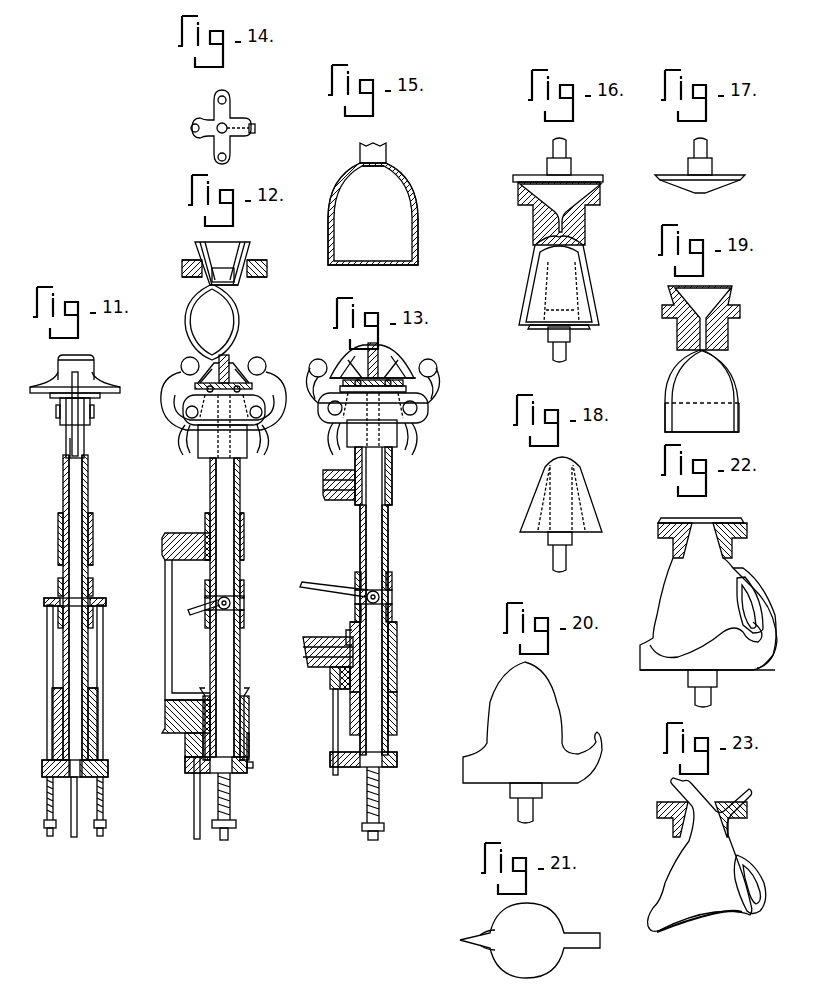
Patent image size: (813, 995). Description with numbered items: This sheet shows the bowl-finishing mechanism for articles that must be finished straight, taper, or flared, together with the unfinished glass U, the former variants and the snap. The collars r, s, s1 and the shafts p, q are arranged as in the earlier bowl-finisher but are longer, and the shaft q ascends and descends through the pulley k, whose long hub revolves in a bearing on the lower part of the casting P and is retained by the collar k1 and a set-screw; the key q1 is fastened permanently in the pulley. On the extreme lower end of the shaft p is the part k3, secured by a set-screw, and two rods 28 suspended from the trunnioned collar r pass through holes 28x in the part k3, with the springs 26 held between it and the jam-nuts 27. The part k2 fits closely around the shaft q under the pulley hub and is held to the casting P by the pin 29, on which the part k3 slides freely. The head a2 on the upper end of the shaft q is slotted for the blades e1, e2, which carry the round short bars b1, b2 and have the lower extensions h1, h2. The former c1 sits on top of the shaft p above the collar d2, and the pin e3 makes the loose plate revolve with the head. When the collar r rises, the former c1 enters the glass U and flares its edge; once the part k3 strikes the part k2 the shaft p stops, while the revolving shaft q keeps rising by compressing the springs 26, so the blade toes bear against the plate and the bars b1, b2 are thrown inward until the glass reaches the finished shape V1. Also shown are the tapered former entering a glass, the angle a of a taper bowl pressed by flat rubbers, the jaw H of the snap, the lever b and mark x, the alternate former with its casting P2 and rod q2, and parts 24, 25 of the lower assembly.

In FIG. 11, the round short bar b1 is at (95, 367).
In FIG. 12, the round short bar b1 is at (262, 358).
In FIG. 13, the round short bar b1 is at (435, 362).
In FIG. 11, the blade e1 is at (100, 383).
In FIG. 12, the blade e1 is at (283, 405).
In FIG. 13, the blade e1 is at (436, 397).
In FIG. 11, the pin e3 is at (62, 408).
In FIG. 11, the head a2 is at (86, 435).
In FIG. 11, the extension h1 is at (70, 440).
In FIG. 12, the extension h1 is at (265, 456).
In FIG. 13, the extension h1 is at (412, 455).
In FIG. 12, the extension h2 is at (182, 456).
In FIG. 13, the extension h2 is at (333, 455).
In FIG. 11, the shaft q is at (88, 492).
In FIG. 12, the shaft q is at (240, 493).
In FIG. 13, the shaft q is at (388, 535).
In FIG. 11, the shaft p is at (76, 548).
In FIG. 12, the shaft p is at (224, 536).
In FIG. 13, the shaft p is at (374, 515).
In FIG. 11, the collar s1 is at (93, 583).
In FIG. 12, the collar s1 is at (244, 582).
In FIG. 13, the collar s1 is at (392, 578).
In FIG. 11, the trunnioned collar r is at (114, 598).
In FIG. 12, the trunnioned collar r is at (244, 603).
In FIG. 13, the trunnioned collar r is at (392, 597).
In FIG. 11, the collar s is at (76, 624).
In FIG. 12, the collar s is at (244, 618).
In FIG. 13, the collar s is at (392, 612).
In FIG. 11, the rods 28 is at (111, 672).
In FIG. 13, the rods 28 is at (373, 840).
In FIG. 11, the pulley k is at (98, 700).
In FIG. 12, the pulley k is at (249, 700).
In FIG. 13, the pulley k is at (397, 630).
In FIG. 12, the collar k1 is at (249, 735).
In FIG. 13, the collar k1 is at (397, 672).
In FIG. 12, the part k² k2 is at (249, 748).
In FIG. 13, the part k² k2 is at (397, 690).
In FIG. 11, the part k³ k3 is at (108, 766).
In FIG. 12, the part k³ k3 is at (253, 763).
In FIG. 13, the part k³ k3 is at (397, 758).
In FIG. 14, the part k³ k3 is at (223, 127).
In FIG. 11, the springs 26 is at (111, 800).
In FIG. 12, the springs 26 is at (230, 798).
In FIG. 13, the springs 26 is at (379, 792).
In FIG. 11, the jam-nuts 27 is at (114, 824).
In FIG. 12, the jam-nuts 27 is at (236, 822).
In FIG. 13, the jam-nuts 27 is at (384, 826).
In FIG. 11, the rod 24 is at (71, 830).
In FIG. 12, the rod 24 is at (194, 805).
In FIG. 12, the pin 25 is at (228, 836).
In FIG. 13, the pin 29 is at (333, 745).
In FIG. 12, the jaw H is at (265, 266).
In FIG. 12, the bulb V1 is at (212, 322).
In FIG. 12, the round short bar b2 is at (185, 358).
In FIG. 13, the round short bar b2 is at (322, 360).
In FIG. 12, the former or shaper c1 is at (229, 362).
In FIG. 13, the former or shaper c1 is at (384, 352).
In FIG. 12, the collar d2 is at (252, 380).
In FIG. 12, the blade e2 is at (170, 418).
In FIG. 13, the blade e2 is at (322, 405).
In FIG. 12, the casting P is at (186, 633).
In FIG. 13, the casting P is at (339, 485).
In FIG. 13, the box P2 is at (328, 652).
In FIG. 12, the lever b is at (204, 601).
In FIG. 19, the lever b is at (741, 425).
In FIG. 13, the mark x is at (330, 613).
In FIG. 13, the tab q1 is at (346, 636).
In FIG. 13, the tab q2 is at (352, 712).
In FIG. 14, the holes 28x is at (238, 154).
In FIG. 15, the glass U is at (373, 204).
In FIG. 16, the angle a is at (590, 292).
In FIG. 19, the angle a is at (739, 399).